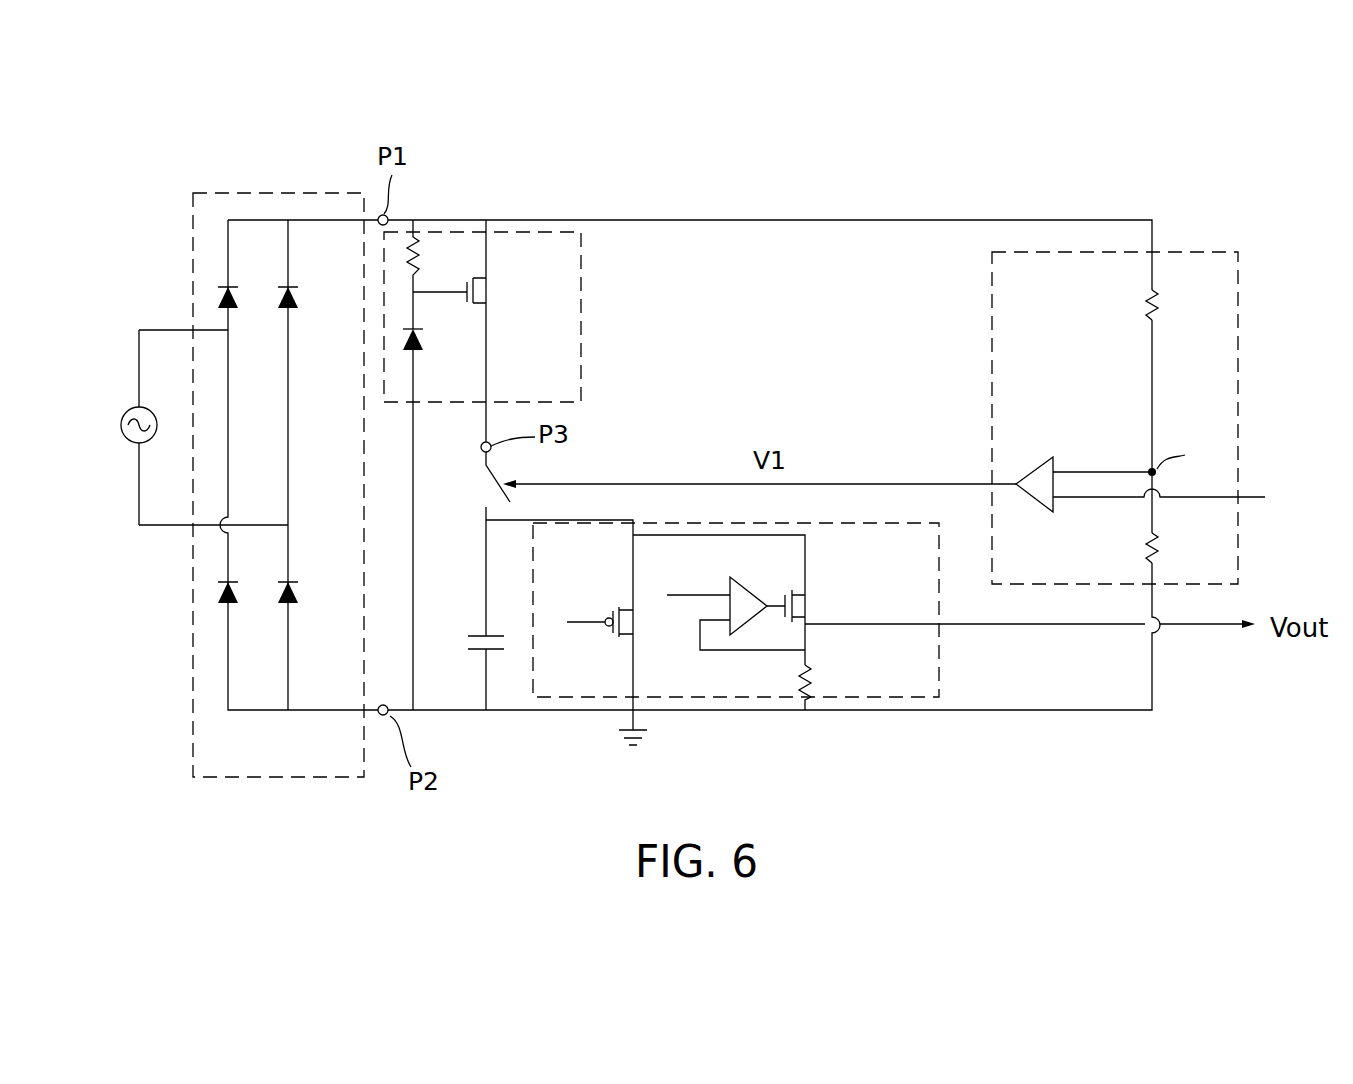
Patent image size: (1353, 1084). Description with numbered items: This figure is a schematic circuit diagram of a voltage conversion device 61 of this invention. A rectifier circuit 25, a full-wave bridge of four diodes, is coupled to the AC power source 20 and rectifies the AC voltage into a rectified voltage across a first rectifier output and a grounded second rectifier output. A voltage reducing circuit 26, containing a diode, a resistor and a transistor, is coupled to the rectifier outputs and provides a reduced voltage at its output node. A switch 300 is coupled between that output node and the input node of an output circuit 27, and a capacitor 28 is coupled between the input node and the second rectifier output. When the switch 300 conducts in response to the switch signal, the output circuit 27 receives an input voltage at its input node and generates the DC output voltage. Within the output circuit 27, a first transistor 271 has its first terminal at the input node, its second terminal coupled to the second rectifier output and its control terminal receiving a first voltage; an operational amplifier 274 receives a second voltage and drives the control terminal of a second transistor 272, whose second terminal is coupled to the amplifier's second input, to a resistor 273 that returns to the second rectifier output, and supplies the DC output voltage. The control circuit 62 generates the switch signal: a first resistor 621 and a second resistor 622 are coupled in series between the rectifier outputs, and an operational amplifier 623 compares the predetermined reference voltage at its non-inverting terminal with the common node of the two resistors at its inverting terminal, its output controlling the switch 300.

The AC power source 20 is at (130, 412).
The rectifier circuit 25 is at (278, 777).
The voltage reducing circuit 26 is at (455, 230).
The output circuit 27 is at (815, 632).
The capacitor 28 is at (475, 650).
The voltage conversion device 61 is at (1017, 172).
The control circuit 62 is at (1157, 418).
The first transistor 271 is at (598, 635).
The second transistor 272 is at (822, 609).
The resistor 273 is at (797, 676).
The operational amplifier 274 is at (745, 577).
The switch 300 is at (476, 484).
The first resistor 621 is at (1145, 305).
The second resistor 622 is at (1160, 555).
The operational amplifier 623 is at (1035, 500).